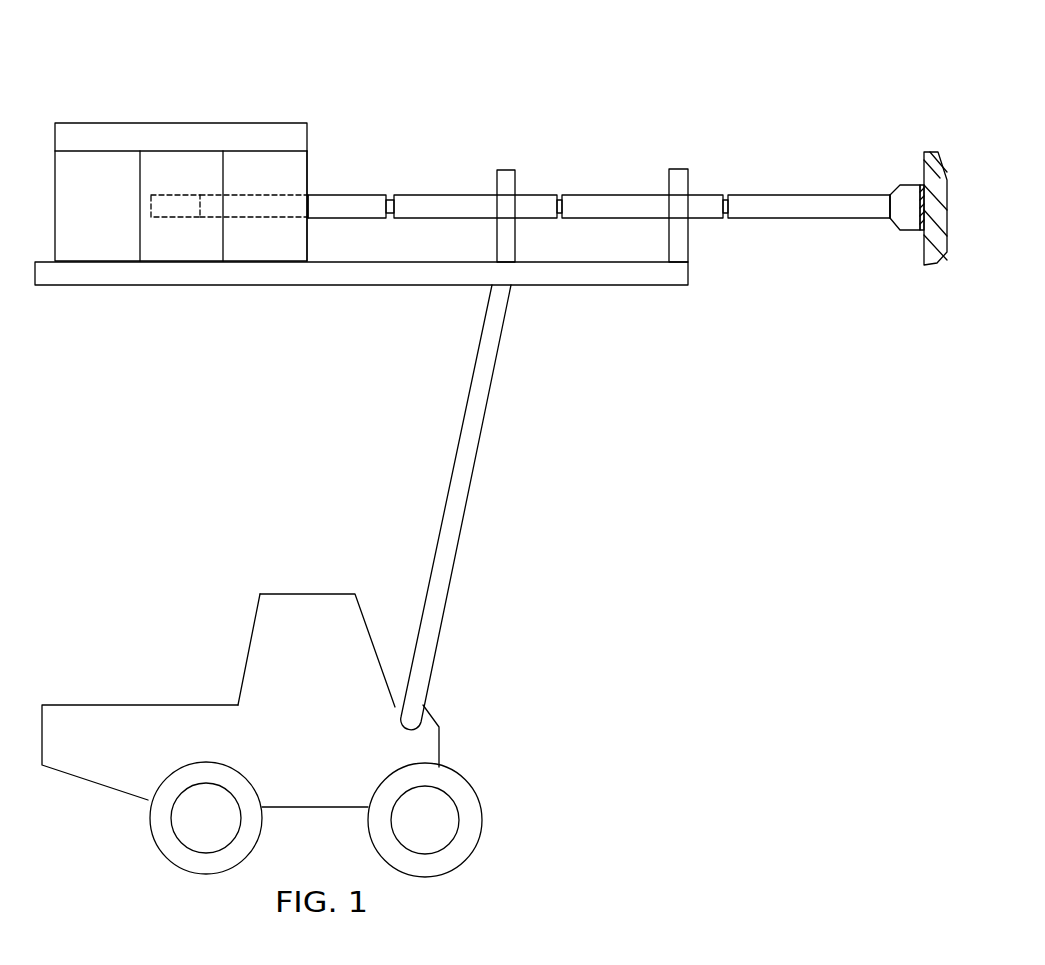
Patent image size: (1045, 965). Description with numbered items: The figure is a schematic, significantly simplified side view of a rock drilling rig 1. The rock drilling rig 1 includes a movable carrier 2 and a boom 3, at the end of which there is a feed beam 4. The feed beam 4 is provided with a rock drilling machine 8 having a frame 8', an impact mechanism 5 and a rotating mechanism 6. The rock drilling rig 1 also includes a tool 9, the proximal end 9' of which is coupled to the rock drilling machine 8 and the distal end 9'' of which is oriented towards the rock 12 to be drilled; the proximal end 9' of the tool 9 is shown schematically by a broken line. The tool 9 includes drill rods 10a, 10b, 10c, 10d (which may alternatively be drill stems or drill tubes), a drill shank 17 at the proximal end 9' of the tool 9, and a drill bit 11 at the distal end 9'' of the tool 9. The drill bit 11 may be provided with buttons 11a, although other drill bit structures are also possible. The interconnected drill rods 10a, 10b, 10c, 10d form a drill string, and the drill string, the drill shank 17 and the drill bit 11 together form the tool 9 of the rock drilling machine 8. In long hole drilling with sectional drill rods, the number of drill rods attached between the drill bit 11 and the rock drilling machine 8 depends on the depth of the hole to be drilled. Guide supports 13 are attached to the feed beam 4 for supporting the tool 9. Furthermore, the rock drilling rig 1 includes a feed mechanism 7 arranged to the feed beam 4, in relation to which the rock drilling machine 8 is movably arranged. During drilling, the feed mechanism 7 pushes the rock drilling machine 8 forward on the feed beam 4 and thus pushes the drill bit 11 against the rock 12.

The rock drilling rig 1 is at (538, 497).
The movable carrier 2 is at (325, 688).
The boom 3 is at (434, 612).
The feed beam 4 is at (587, 280).
The impact mechanism 5 is at (193, 167).
The rotating mechanism 6 is at (275, 173).
The feed mechanism 7 is at (123, 165).
The rock drilling machine 8 is at (246, 176).
The frame 8' is at (168, 116).
The tool 9 is at (599, 154).
The proximal end of the tool 9' is at (331, 166).
The distal end of the tool 9'' is at (858, 239).
The drill rod 10a is at (350, 202).
The drill rod 10b is at (428, 207).
The drill rod 10c is at (575, 205).
The drill rod 10d is at (797, 207).
The drill bit 11 is at (900, 198).
The buttons 11a is at (922, 183).
The rock 12 is at (937, 250).
The guide supports 13 is at (505, 247).
The drill shank 17 is at (183, 207).